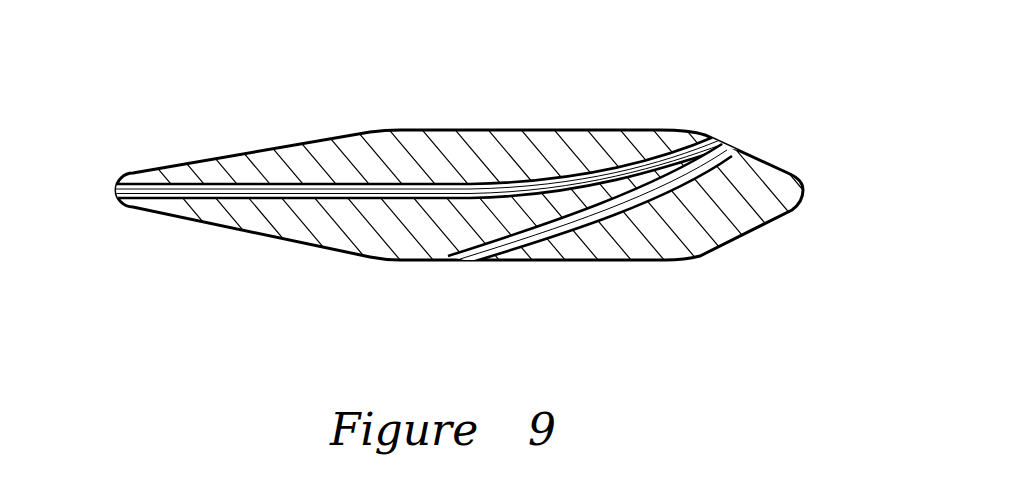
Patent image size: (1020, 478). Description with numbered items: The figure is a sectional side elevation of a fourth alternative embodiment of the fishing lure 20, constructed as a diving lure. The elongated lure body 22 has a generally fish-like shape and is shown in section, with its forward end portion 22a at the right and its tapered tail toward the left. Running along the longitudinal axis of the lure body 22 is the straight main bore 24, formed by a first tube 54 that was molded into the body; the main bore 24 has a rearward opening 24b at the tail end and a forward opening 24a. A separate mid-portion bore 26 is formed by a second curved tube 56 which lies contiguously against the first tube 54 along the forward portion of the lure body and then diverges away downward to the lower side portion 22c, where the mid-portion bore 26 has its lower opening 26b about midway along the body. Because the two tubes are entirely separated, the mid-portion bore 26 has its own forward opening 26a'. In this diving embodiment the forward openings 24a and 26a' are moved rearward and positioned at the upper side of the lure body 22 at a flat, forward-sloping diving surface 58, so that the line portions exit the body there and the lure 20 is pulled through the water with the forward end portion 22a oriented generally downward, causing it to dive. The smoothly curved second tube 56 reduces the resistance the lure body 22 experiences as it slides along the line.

The fishing lure 20 is at (514, 104).
The lure body 22 is at (450, 147).
The forward end portion 22a is at (805, 200).
The lower side portion 22c is at (390, 261).
The main bore 24 is at (341, 183).
The forward opening 24a is at (712, 138).
The rearward opening 24b is at (113, 193).
The mid-portion bore 26 is at (545, 260).
The forward opening 26a' is at (756, 112).
The lower opening 26b is at (466, 261).
The first tube 54 is at (640, 160).
The second curved tube 56 is at (643, 205).
The diving surface 58 is at (762, 165).